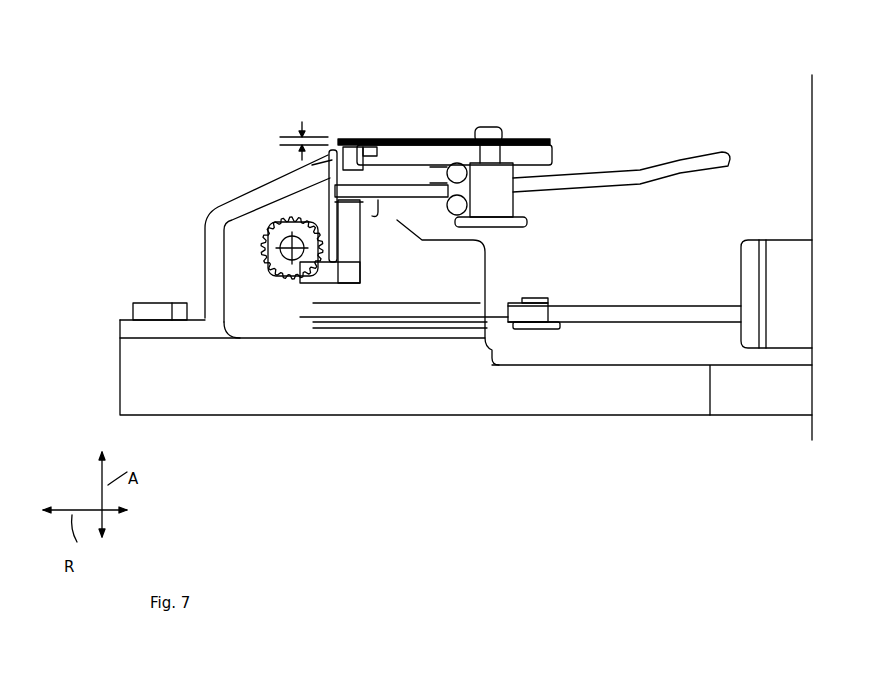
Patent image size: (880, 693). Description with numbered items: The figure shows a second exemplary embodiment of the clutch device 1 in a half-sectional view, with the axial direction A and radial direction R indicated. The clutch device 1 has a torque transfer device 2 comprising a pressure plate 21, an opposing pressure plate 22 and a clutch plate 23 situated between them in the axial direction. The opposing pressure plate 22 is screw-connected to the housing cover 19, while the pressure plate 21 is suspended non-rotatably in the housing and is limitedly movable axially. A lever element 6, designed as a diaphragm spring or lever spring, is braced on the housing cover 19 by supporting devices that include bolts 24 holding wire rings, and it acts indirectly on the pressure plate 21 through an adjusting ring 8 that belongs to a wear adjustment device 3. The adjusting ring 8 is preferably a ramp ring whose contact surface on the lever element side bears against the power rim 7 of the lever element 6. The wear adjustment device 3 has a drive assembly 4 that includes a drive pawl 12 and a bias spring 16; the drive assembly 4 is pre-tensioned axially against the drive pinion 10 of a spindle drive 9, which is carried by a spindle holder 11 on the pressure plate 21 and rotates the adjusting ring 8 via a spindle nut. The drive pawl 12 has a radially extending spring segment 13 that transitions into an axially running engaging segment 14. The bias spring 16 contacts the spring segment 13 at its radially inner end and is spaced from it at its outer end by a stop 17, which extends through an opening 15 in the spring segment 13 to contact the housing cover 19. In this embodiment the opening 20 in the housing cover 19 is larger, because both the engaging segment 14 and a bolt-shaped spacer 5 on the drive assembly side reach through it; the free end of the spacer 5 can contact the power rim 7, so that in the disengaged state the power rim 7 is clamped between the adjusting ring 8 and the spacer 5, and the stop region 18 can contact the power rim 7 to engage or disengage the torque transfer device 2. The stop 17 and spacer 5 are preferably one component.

The clutch device 1 is at (157, 128).
The torque transfer device 2 is at (563, 350).
The wear adjustment device 3 is at (315, 193).
The drive assembly 4 is at (408, 110).
The spacer on the drive assembly side 5 is at (366, 140).
The lever element 6 is at (647, 177).
The power rim 7 is at (343, 172).
The adjusting ring 8 is at (343, 215).
The spindle drive 9 is at (287, 257).
The drive pinion 10 is at (278, 220).
The spindle holder 11 is at (318, 262).
The drive pawl 12 is at (387, 147).
The spring segment 13 is at (440, 140).
The engaging segment 14 is at (318, 190).
The opening 15 is at (348, 133).
The bias spring 16 is at (458, 140).
The stop 17 is at (343, 147).
The stop region 18 is at (302, 122).
The housing cover 19 is at (542, 147).
The opening 20 is at (353, 223).
The pressure plate 21 is at (475, 262).
The opposing pressure plate 22 is at (530, 402).
The clutch plate 23 is at (577, 308).
The bolts 24 is at (490, 157).